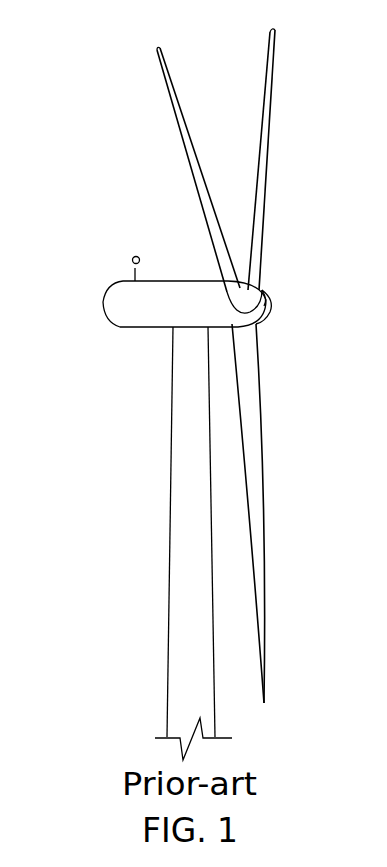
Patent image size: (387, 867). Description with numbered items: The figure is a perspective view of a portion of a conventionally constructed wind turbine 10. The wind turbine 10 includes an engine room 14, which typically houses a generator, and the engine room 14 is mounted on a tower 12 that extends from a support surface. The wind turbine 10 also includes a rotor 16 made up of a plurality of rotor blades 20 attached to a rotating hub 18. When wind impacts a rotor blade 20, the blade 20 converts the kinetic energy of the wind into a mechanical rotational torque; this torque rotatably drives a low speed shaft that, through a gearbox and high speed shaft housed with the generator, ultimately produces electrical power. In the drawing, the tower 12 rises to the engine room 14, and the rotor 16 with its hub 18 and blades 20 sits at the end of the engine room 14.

The wind turbine 10 is at (82, 118).
The tower 12 is at (172, 578).
The engine room 14 is at (146, 330).
The rotor 16 is at (283, 302).
The rotating hub 18 is at (270, 308).
The rotor blades 20 is at (197, 147).